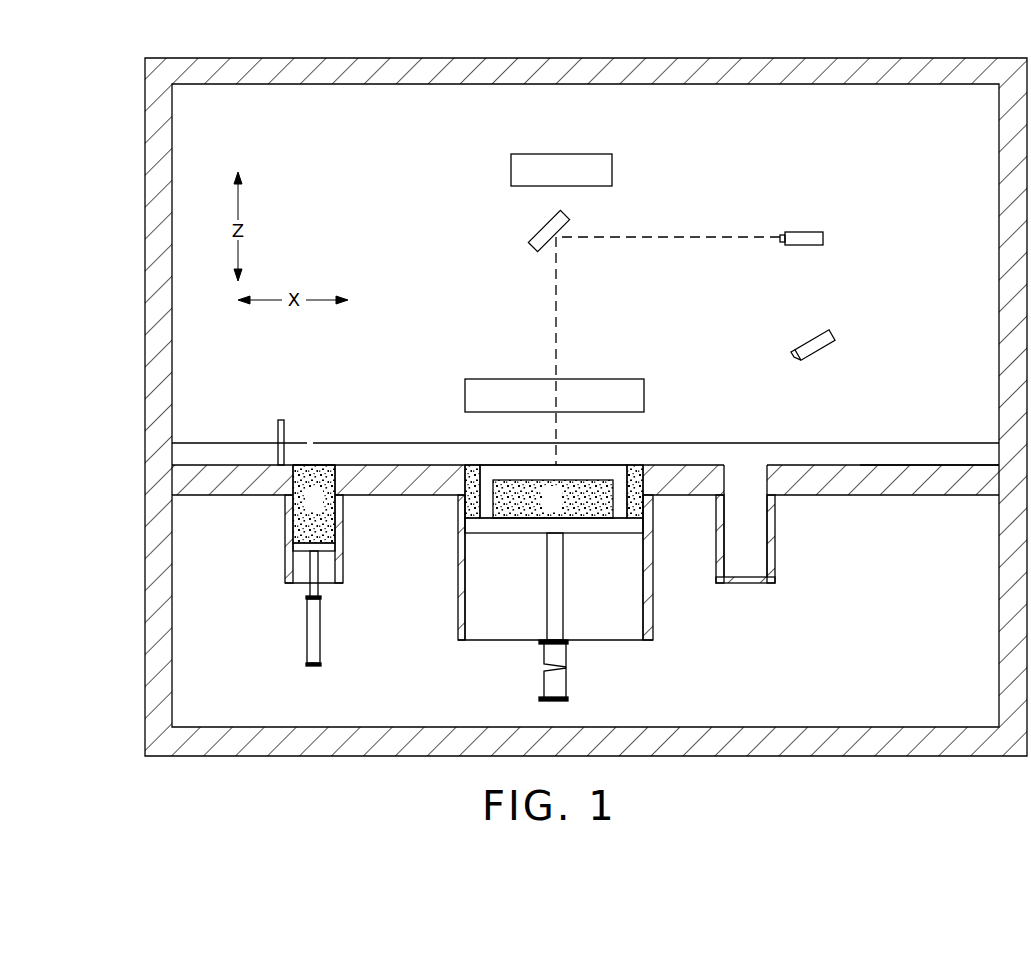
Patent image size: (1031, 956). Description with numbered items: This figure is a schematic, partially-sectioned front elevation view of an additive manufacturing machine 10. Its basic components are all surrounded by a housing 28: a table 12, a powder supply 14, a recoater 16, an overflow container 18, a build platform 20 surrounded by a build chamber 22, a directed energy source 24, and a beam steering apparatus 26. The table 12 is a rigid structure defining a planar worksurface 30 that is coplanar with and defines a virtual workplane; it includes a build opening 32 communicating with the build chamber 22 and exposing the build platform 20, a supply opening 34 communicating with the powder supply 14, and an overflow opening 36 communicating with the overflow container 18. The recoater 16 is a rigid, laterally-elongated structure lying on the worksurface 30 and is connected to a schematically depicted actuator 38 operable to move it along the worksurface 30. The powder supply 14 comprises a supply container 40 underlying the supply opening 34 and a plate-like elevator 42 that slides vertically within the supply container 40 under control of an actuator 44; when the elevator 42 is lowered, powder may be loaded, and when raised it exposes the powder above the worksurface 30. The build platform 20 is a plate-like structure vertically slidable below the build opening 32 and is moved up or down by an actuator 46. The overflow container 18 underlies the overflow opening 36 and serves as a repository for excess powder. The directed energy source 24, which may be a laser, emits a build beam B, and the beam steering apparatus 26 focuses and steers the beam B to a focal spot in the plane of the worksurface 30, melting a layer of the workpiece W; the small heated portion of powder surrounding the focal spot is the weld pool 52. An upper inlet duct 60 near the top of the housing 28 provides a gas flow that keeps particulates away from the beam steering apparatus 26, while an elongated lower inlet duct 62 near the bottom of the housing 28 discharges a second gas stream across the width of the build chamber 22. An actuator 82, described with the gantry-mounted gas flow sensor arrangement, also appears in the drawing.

The additive manufacturing machine 10 is at (534, 407).
The table 12 is at (914, 493).
The powder supply 14 is at (287, 565).
The recoater 16 is at (280, 420).
The overflow container 18 is at (722, 538).
The build platform 20 is at (545, 528).
The build chamber 22 is at (652, 620).
The directed energy source 24 is at (800, 232).
The beam steering apparatus 26 is at (545, 230).
The housing 28 is at (386, 76).
The worksurface 30 is at (922, 465).
The build opening 32 is at (650, 488).
The supply opening 34 is at (292, 480).
The overflow opening 36 is at (763, 468).
The actuator 38 is at (240, 443).
The supply container 40 is at (338, 542).
The elevator 42 is at (320, 548).
The actuator 44 is at (318, 630).
The actuator 46 is at (555, 592).
The weld pool 52 is at (556, 465).
The upper inlet duct 60 is at (563, 163).
The lower inlet duct 62 is at (568, 390).
The second actuator 82 is at (818, 340).
The build beam B is at (552, 300).
The workpiece W is at (612, 468).